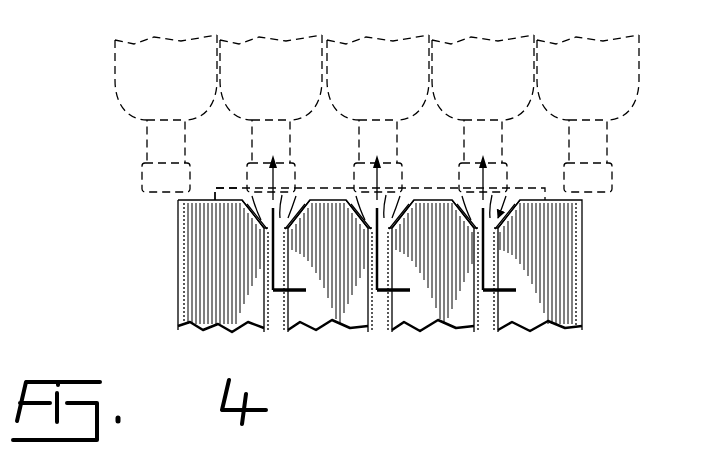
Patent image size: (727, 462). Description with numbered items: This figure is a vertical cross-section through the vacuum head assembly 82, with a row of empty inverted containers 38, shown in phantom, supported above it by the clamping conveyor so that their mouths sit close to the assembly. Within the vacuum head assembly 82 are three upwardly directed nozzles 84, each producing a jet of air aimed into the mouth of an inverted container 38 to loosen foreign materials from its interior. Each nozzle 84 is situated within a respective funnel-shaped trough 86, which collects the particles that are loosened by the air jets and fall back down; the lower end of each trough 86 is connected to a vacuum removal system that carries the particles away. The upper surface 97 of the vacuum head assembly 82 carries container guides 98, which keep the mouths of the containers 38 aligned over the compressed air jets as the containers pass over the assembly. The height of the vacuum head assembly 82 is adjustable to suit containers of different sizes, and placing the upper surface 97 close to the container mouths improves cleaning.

The inverted containers 38 is at (184, 91).
The vacuum head assembly 82 is at (586, 258).
The nozzles 84 is at (487, 253).
The funnel-shaped trough 86 is at (350, 202).
The upper surface 97 is at (550, 197).
The container guides 98 is at (229, 186).